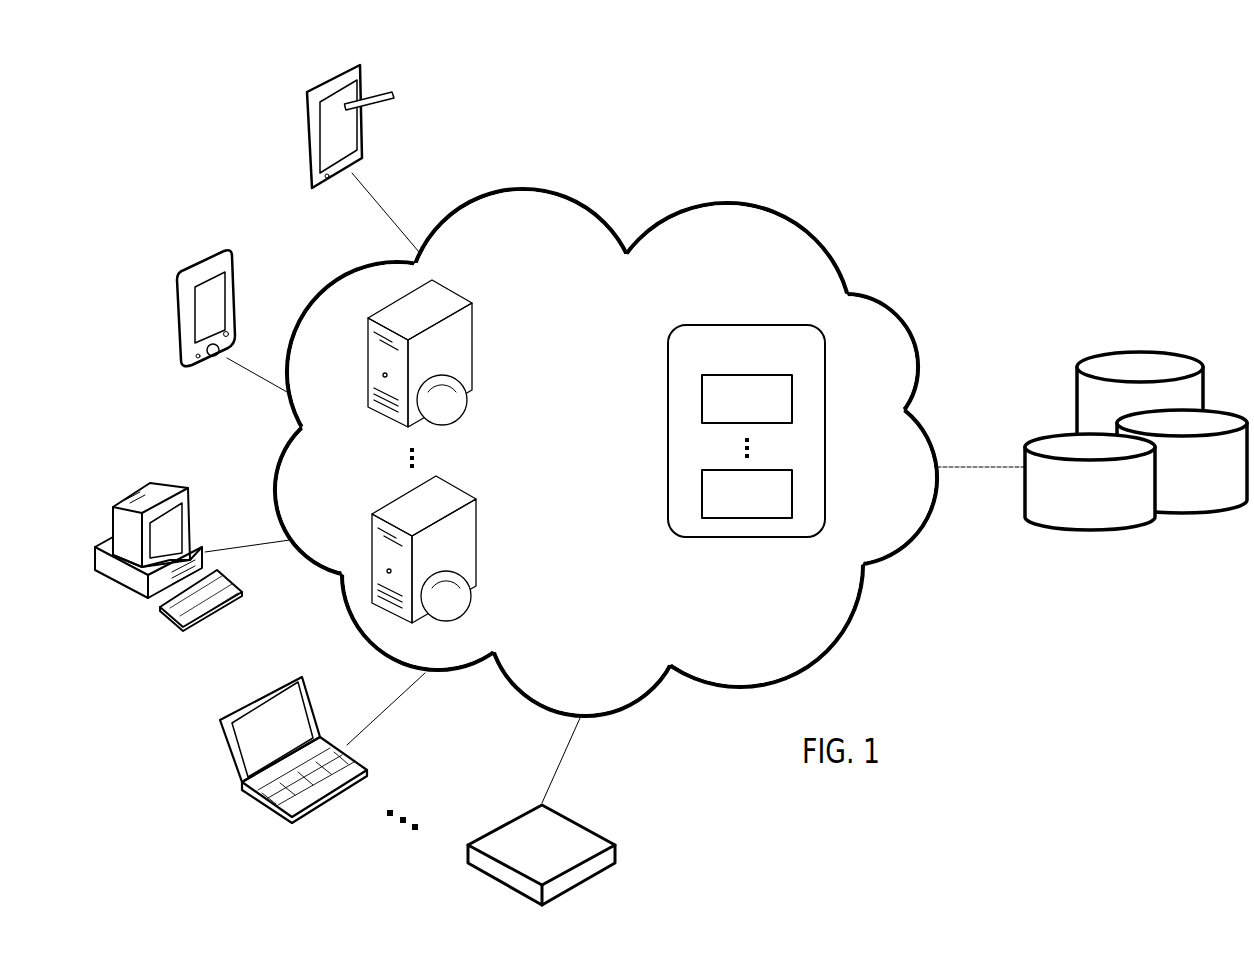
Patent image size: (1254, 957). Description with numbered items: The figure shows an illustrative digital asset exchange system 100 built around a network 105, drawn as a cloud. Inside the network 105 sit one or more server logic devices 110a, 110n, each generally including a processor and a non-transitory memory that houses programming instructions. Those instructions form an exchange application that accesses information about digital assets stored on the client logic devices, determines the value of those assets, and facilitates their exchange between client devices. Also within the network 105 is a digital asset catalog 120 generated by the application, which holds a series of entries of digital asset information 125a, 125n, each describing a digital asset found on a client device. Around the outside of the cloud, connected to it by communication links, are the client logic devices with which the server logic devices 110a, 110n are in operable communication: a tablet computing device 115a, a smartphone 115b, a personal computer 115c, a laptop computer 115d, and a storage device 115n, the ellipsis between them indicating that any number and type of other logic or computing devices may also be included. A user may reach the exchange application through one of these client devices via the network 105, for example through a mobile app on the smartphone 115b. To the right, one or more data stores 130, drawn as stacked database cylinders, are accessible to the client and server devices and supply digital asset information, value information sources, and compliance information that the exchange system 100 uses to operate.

The digital asset exchange system 100 is at (868, 219).
The network 105 is at (622, 288).
The server logic device 110a is at (468, 262).
The server logic device 110n is at (449, 483).
The tablet computing device 115a is at (347, 63).
The smartphone 115b is at (210, 253).
The personal computer 115c is at (177, 481).
The laptop computer 115d is at (292, 677).
The storage device 115n is at (577, 820).
The digital asset catalog 120 is at (764, 360).
The digital asset information 125a is at (770, 412).
The digital asset information 125n is at (770, 507).
The data store 130 is at (1110, 501).